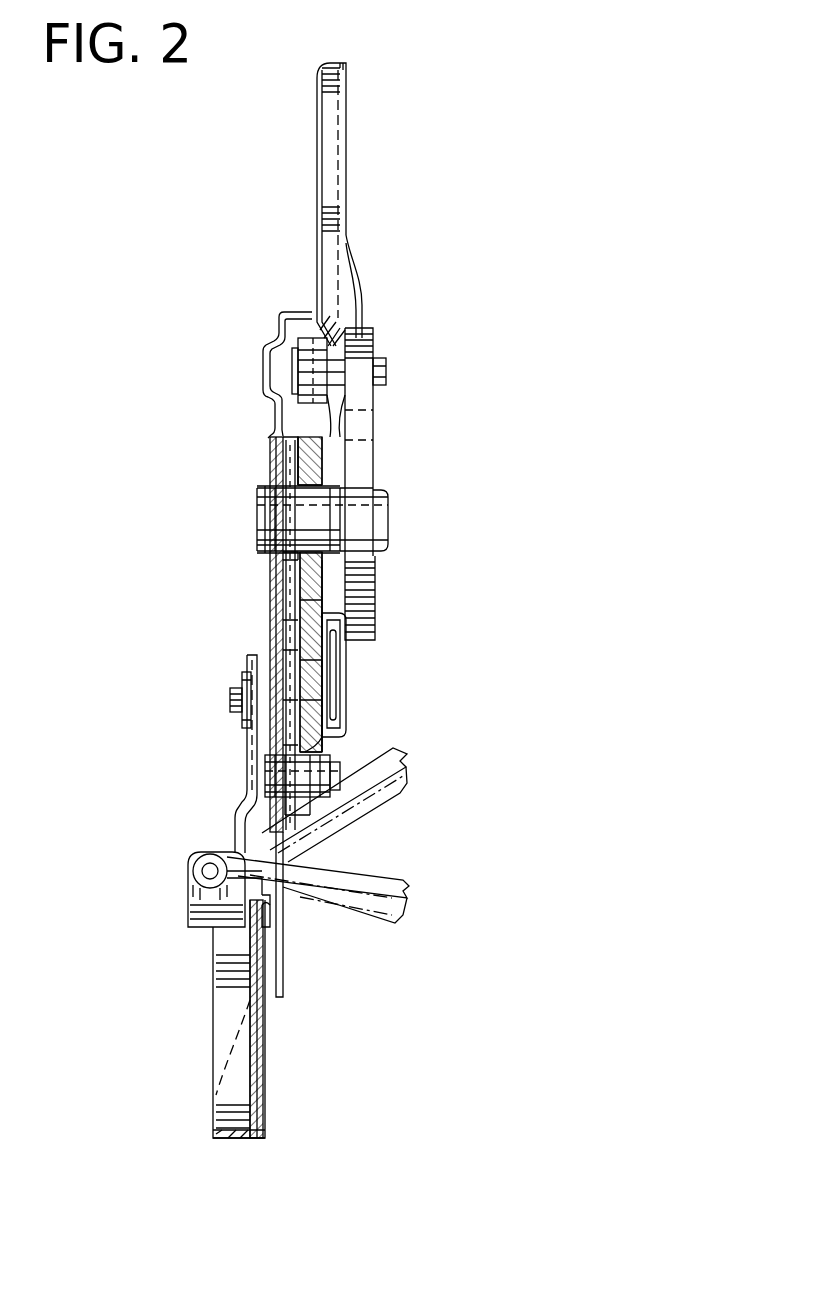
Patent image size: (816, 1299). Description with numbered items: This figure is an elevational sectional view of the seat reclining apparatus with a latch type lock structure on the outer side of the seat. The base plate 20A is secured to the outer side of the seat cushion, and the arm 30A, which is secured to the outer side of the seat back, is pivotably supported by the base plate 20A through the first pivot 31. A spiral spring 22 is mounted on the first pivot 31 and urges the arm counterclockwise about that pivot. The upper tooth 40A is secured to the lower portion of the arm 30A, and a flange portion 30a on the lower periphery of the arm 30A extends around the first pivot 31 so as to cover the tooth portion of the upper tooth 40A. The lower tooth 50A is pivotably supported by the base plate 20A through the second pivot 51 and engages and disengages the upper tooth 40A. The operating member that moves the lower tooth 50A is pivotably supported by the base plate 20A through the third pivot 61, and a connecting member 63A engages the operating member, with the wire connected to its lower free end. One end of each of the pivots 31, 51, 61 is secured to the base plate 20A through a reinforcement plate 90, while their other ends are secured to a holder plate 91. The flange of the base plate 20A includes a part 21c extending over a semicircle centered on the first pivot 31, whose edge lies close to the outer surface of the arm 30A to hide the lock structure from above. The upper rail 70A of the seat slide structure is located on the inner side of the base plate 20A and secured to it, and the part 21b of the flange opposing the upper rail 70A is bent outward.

The arm 30A is at (348, 189).
The part of the flange portion 21c is at (297, 310).
The base plate 20A is at (268, 462).
The spiral spring 22 is at (375, 410).
The first pivot 31 is at (388, 520).
The upper tooth 40A is at (348, 592).
The reinforcement plate 90 is at (273, 603).
The flange portion 30a is at (393, 682).
The holder plate 91 is at (350, 712).
The lower tooth 50A is at (328, 748).
The second pivot 51 is at (336, 772).
The third pivot 61 is at (231, 700).
The connecting member 63A is at (204, 754).
The upper rail 70A is at (288, 1052).
The part of the flange portion 21b is at (230, 1140).